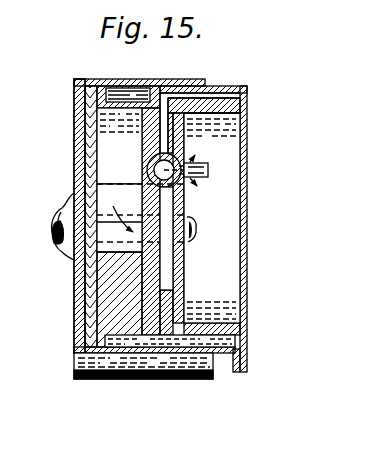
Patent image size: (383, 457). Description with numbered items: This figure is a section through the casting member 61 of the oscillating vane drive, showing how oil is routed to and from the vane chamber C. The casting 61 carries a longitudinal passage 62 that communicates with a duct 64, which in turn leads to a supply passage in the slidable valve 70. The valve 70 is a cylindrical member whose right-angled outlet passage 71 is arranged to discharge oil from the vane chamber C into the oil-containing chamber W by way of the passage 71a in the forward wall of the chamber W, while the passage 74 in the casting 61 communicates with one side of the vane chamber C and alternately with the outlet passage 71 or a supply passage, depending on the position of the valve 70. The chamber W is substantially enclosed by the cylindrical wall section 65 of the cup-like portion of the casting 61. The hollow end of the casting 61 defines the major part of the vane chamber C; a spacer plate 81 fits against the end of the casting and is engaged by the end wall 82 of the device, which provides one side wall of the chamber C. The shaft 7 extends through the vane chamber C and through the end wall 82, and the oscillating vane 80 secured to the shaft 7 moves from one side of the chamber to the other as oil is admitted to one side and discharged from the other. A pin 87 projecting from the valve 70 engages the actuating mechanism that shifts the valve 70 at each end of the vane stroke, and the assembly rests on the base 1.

The base plate 1 is at (124, 378).
The shaft 7 is at (66, 242).
The casting member 61 is at (250, 277).
The longitudinal passage 62 is at (230, 90).
The duct 64 is at (167, 140).
The cylindrical wall section 65 is at (236, 105).
The slidable valve 70 is at (148, 168).
The outlet passage 71 is at (170, 181).
The passage 71a is at (206, 168).
The passage 74 is at (165, 259).
The oscillating vane 80 is at (92, 195).
The spacer plate 81 is at (90, 145).
The end wall 82 is at (82, 303).
The pin 87 is at (181, 174).
The vane chamber C is at (106, 131).
The oil-containing chamber W is at (212, 282).